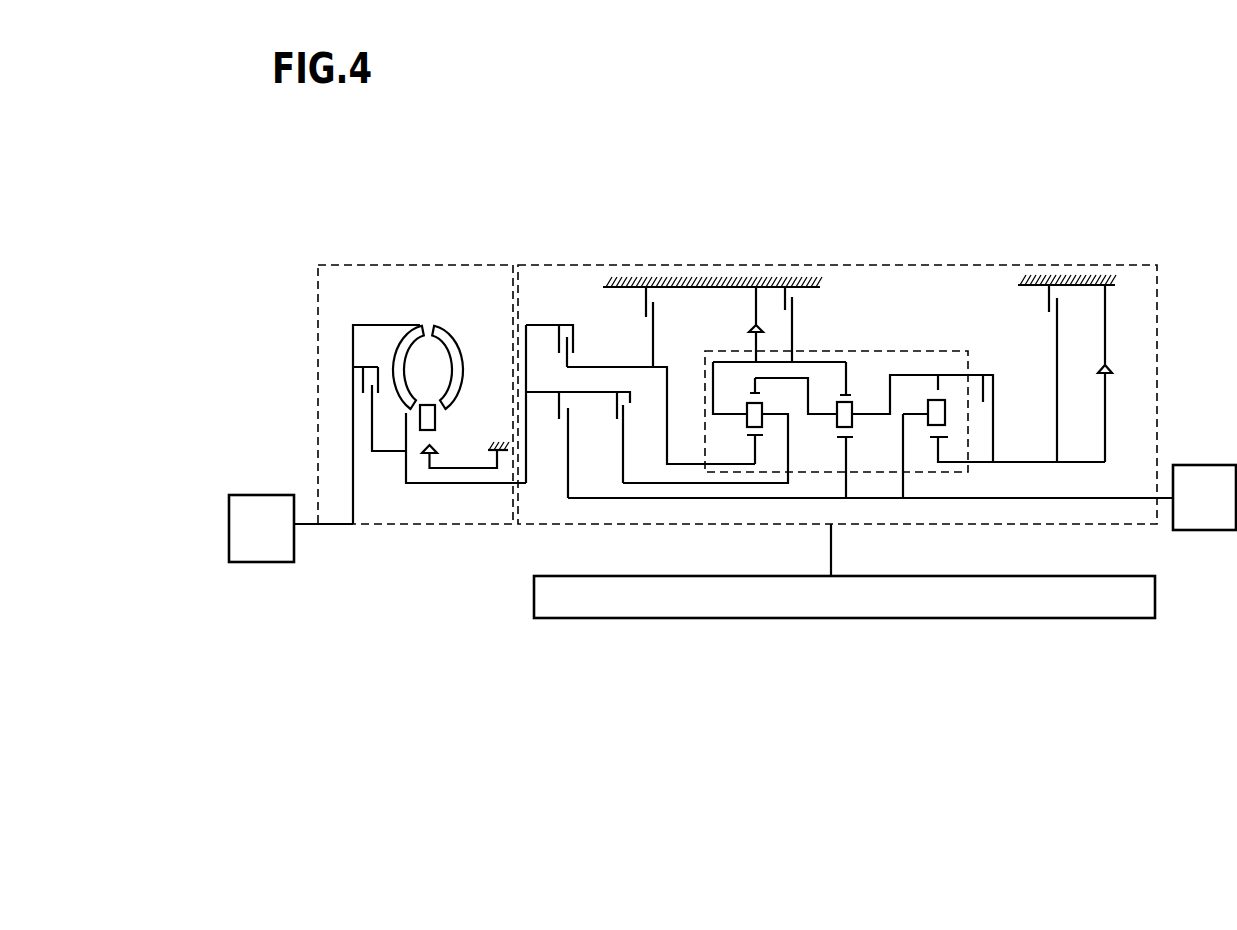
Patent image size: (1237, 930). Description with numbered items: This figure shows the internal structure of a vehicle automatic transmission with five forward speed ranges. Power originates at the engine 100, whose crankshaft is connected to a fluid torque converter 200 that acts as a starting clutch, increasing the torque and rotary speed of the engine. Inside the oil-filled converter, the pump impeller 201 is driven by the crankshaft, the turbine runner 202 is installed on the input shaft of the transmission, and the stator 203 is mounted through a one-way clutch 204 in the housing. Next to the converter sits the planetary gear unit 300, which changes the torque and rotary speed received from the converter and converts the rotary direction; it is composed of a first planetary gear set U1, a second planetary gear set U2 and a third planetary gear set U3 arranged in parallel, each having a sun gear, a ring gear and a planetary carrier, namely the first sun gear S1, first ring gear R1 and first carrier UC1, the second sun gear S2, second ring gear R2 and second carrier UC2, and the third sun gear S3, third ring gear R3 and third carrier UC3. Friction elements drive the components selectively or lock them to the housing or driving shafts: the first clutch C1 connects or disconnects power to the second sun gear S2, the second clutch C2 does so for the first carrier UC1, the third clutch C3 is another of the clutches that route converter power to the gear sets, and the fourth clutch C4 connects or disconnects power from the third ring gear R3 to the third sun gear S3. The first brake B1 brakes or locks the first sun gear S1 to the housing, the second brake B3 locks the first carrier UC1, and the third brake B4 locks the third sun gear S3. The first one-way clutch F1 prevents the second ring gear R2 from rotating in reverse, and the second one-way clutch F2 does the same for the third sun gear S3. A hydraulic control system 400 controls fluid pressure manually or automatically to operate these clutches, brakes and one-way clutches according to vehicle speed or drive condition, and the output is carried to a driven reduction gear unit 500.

The engine 100 is at (276, 564).
The fluid torque converter 200 is at (437, 264).
The pump impeller 201 is at (400, 336).
The turbine runner 202 is at (452, 328).
The stator 203 is at (430, 422).
The one-way clutch 204 is at (429, 456).
The planetary gear unit 300 is at (923, 347).
The hydraulic control system 400 is at (818, 621).
The driven reduction gear unit 500 is at (1200, 532).
The first brake B1 is at (655, 308).
The second brake B3 is at (794, 308).
The third brake B4 is at (1049, 306).
The first clutch C1 is at (570, 424).
The second clutch C2 is at (625, 424).
The third clutch C3 is at (569, 348).
The fourth clutch C4 is at (994, 398).
The first one-way clutch F1 is at (750, 329).
The second one-way clutch F2 is at (1112, 372).
The first ring gear R1 is at (754, 392).
The second ring gear R2 is at (845, 393).
The third ring gear R3 is at (937, 389).
The first sun gear S1 is at (750, 436).
The second sun gear S2 is at (845, 438).
The third sun gear S3 is at (938, 438).
The first planetary carrier UC1 is at (762, 405).
The second planetary carrier UC2 is at (852, 403).
The third planetary carrier UC3 is at (945, 412).
The first planetary gear set U1 is at (741, 445).
The second planetary gear set U2 is at (857, 445).
The third planetary gear set U3 is at (951, 437).